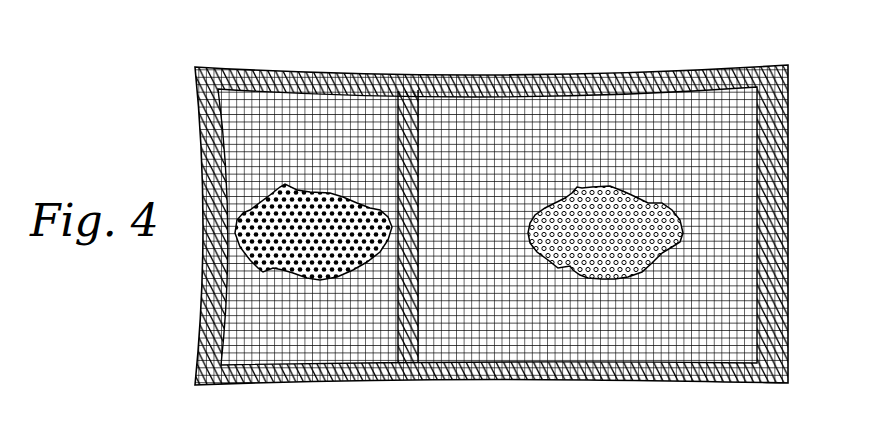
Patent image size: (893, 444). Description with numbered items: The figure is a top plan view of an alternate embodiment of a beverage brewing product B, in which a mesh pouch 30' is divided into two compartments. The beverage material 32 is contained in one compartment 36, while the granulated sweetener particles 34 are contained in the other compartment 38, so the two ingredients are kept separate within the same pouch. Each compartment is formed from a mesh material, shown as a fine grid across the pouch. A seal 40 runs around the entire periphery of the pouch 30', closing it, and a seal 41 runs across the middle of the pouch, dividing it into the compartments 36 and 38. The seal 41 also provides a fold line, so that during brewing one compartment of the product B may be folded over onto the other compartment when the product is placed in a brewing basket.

The pouch 30' is at (491, 233).
The beverage material 32 is at (300, 212).
The granulated sweetener particles 34 is at (608, 213).
The compartment 36 is at (260, 313).
The compartment 38 is at (728, 300).
The seal 40 is at (777, 181).
The seal 41 is at (413, 122).
The beverage brewing product B is at (508, 60).